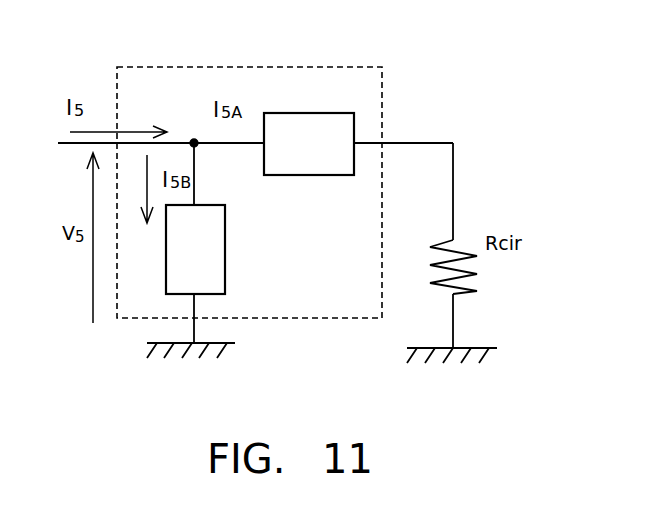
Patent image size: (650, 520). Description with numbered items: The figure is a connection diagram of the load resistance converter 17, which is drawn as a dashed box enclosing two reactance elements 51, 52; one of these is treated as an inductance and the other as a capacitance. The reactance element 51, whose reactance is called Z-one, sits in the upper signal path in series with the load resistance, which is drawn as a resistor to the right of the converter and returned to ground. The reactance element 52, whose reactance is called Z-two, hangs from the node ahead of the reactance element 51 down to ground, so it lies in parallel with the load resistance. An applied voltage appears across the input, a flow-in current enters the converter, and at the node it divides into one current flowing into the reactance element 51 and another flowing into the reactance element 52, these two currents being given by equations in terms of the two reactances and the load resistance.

The load resistance converter 17 is at (243, 67).
The reactance element 51 is at (287, 113).
The reactance element 52 is at (226, 245).